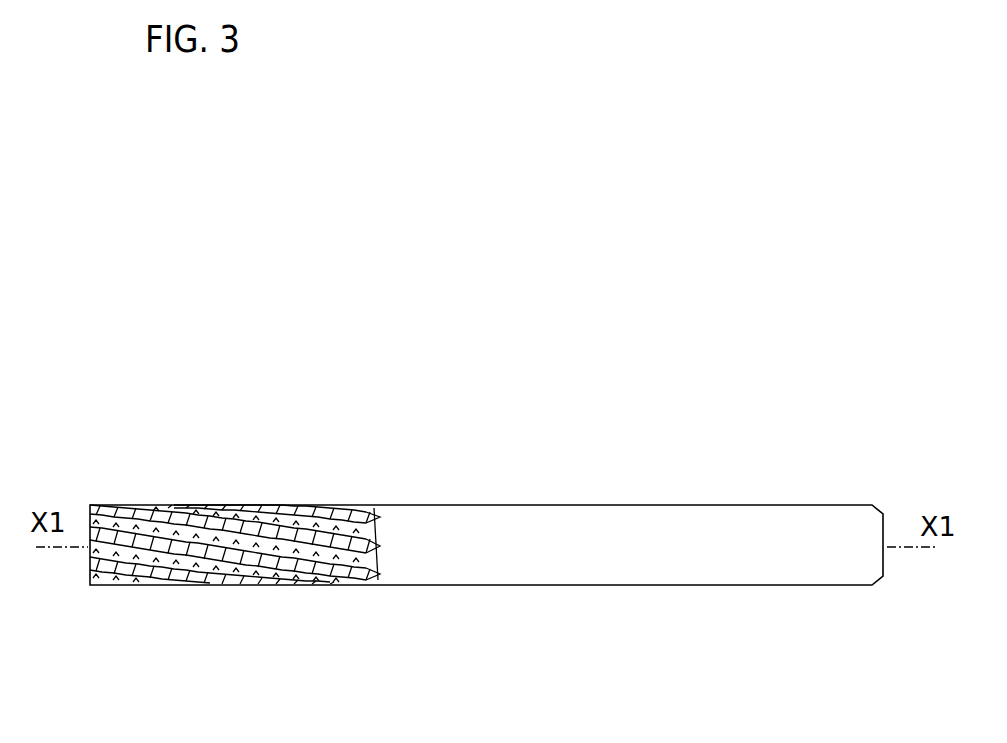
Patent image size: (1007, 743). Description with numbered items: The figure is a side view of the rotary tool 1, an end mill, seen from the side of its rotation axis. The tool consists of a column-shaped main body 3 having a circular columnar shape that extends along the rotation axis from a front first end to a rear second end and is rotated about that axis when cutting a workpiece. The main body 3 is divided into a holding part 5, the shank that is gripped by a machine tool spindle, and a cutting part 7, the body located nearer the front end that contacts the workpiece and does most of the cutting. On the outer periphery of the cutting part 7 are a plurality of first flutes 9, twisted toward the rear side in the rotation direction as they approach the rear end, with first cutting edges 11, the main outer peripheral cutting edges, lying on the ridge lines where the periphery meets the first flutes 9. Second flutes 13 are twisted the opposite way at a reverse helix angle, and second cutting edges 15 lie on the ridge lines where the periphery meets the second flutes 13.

The rotary tool 1 is at (745, 407).
The main body 3 is at (467, 523).
The holding part 5 is at (885, 477).
The cutting part 7 is at (380, 477).
The first flutes 9 is at (135, 556).
The first cutting edges 11 is at (273, 507).
The second flutes 13 is at (232, 556).
The second cutting edges 15 is at (157, 508).